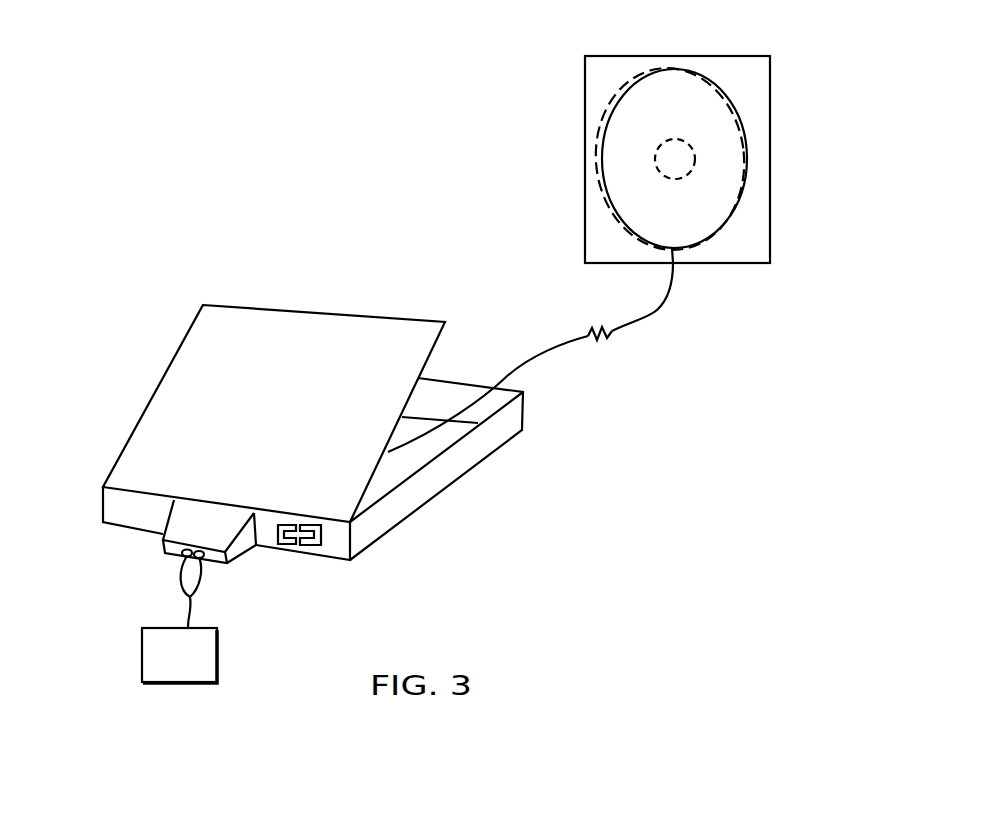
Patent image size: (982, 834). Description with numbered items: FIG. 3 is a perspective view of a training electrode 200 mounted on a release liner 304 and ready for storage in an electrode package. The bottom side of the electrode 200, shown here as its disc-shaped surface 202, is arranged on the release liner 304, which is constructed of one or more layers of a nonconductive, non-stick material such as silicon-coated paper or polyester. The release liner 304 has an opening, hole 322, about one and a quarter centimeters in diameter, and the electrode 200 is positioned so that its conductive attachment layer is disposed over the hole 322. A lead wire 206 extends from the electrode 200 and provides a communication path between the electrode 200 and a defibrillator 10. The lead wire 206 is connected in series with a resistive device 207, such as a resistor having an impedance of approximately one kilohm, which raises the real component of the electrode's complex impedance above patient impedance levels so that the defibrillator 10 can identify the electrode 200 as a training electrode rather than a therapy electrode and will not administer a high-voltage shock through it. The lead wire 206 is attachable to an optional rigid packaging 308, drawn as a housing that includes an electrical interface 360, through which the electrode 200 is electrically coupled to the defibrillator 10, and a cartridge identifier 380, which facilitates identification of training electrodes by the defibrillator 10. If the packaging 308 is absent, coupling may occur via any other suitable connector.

The training electrode 200 is at (620, 90).
The disc label surface 202 is at (623, 195).
The hole 322 is at (697, 162).
The release liner 304 is at (770, 193).
The lead wire 206 is at (650, 310).
The resistive device 207 is at (590, 334).
The packaging 308 is at (450, 492).
The electrical interface 360 is at (163, 538).
The cartridge identifier 380 is at (322, 542).
The defibrillator 10 is at (190, 670).